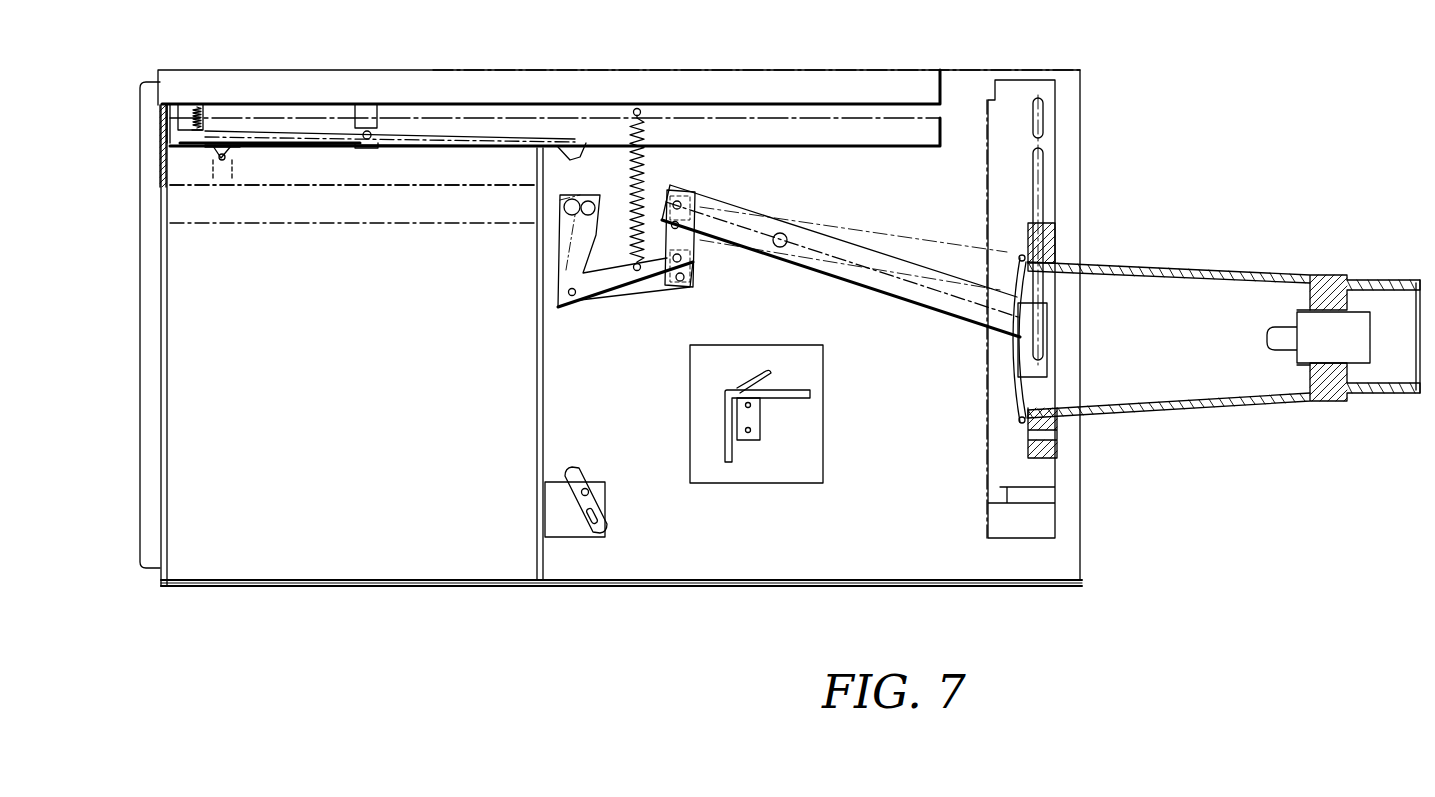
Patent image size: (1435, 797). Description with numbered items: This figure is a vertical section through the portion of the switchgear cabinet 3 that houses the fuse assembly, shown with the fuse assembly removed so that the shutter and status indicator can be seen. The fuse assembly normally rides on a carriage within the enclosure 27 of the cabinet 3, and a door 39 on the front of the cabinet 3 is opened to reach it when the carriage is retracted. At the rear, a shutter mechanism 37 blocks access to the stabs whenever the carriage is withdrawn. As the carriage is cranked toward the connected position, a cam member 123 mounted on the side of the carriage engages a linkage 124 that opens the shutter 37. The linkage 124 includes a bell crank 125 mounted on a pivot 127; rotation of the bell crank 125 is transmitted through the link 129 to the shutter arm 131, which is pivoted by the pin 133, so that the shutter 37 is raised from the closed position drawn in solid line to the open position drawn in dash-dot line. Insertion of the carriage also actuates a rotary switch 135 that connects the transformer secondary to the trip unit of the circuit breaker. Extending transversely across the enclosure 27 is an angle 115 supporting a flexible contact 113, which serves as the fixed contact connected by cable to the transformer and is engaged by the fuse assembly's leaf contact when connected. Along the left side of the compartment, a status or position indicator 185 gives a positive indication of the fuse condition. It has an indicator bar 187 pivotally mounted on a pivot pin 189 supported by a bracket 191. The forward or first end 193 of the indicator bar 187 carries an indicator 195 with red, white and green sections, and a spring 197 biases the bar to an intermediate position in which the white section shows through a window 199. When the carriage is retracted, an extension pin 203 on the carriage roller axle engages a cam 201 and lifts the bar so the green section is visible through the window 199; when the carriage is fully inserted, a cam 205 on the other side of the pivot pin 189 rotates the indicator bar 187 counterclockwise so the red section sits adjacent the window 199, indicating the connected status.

The cabinet 3 is at (1077, 67).
The enclosure 27 is at (337, 572).
The shutter mechanism 37 is at (1035, 172).
The door 39 is at (137, 276).
The flexible contact 113 is at (770, 373).
The angle 115 is at (723, 455).
The cam member 123 is at (640, 180).
The linkage 124 is at (613, 318).
The bell crank 125 is at (595, 289).
The pivot 127 is at (558, 290).
The link 129 is at (697, 247).
The shutter arm 131 is at (713, 203).
The pin 133 is at (785, 235).
The rotary switch 135 is at (583, 465).
The status or position indicator 185 is at (343, 162).
The indicator bar 187 is at (243, 130).
The pivot pin 189 is at (367, 143).
The bracket 191 is at (362, 110).
The forward or first end 193 is at (187, 105).
The indicator 195 is at (170, 125).
The spring 197 is at (203, 113).
The window 199 is at (158, 120).
The cam 201 is at (220, 146).
The extension pin 203 is at (233, 158).
The cam 205 is at (570, 145).